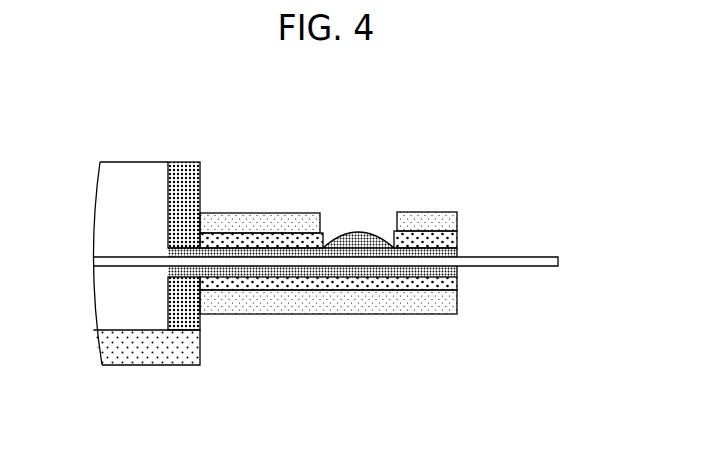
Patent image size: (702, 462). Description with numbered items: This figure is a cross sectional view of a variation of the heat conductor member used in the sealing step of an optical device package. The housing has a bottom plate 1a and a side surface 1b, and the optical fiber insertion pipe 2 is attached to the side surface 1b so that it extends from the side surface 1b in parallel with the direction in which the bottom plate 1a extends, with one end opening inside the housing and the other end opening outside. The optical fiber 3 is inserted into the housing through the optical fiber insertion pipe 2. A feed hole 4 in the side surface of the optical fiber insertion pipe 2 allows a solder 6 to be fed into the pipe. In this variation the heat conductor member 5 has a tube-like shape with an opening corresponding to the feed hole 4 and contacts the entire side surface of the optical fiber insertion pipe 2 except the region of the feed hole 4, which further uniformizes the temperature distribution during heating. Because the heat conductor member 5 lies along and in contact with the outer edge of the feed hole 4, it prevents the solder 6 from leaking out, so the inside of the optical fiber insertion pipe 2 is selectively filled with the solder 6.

The bottom plate 1a is at (133, 356).
The side surface 1b is at (185, 172).
The optical fiber insertion pipe 2 is at (265, 237).
The optical fiber 3 is at (497, 267).
The feed hole 4 is at (376, 222).
The heat conductor member 5 is at (310, 311).
The solder 6 is at (357, 236).